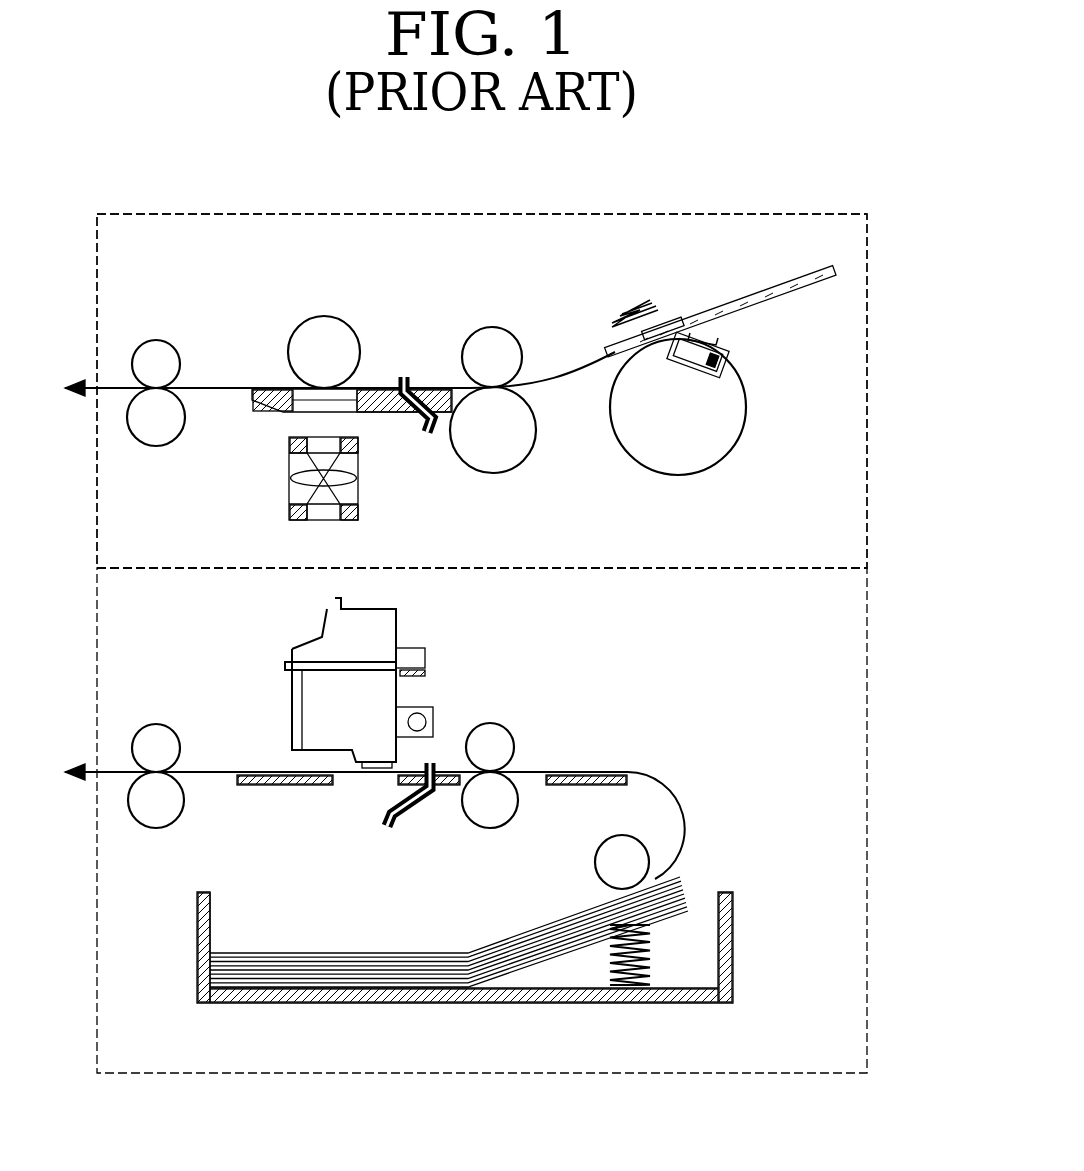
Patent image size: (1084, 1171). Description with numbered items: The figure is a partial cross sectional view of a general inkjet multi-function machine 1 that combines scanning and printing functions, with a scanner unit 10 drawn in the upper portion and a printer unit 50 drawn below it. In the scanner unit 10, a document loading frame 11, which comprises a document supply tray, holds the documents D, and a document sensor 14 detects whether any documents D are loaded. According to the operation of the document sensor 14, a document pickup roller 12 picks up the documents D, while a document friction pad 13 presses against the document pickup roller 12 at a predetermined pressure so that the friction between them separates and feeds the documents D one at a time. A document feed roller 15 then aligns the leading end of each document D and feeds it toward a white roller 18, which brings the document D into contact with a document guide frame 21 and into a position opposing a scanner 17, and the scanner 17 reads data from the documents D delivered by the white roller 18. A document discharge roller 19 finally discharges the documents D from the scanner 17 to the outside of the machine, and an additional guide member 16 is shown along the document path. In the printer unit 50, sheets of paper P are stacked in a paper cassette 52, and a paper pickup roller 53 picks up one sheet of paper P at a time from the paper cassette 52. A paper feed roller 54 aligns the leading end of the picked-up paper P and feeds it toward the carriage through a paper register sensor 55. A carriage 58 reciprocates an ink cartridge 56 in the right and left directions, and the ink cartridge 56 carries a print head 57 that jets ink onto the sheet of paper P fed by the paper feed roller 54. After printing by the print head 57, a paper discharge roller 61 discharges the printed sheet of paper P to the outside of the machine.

The inkjet multi-function machine 1 is at (248, 157).
The scanner unit 10 is at (867, 377).
The document loading frame 11 is at (806, 288).
The document pickup roller 12 is at (680, 470).
The document friction pad 13 is at (676, 319).
The document sensor 14 is at (736, 362).
The document feed roller 15 is at (496, 470).
The document guide 16 is at (404, 374).
The scanner 17 is at (289, 498).
The white roller 18 is at (326, 326).
The document discharge roller 19 is at (160, 445).
The document guide frame 21 is at (262, 412).
The document D is at (772, 289).
The printer unit 50 is at (867, 795).
The paper cassette 52 is at (447, 1003).
The paper pickup roller 53 is at (600, 858).
The paper feed roller 54 is at (492, 806).
The paper register sensor 55 is at (390, 833).
The ink cartridge 56 is at (326, 640).
The print head 57 is at (372, 770).
The carriage 58 is at (398, 693).
The paper discharge roller 61 is at (160, 826).
The paper P is at (235, 953).